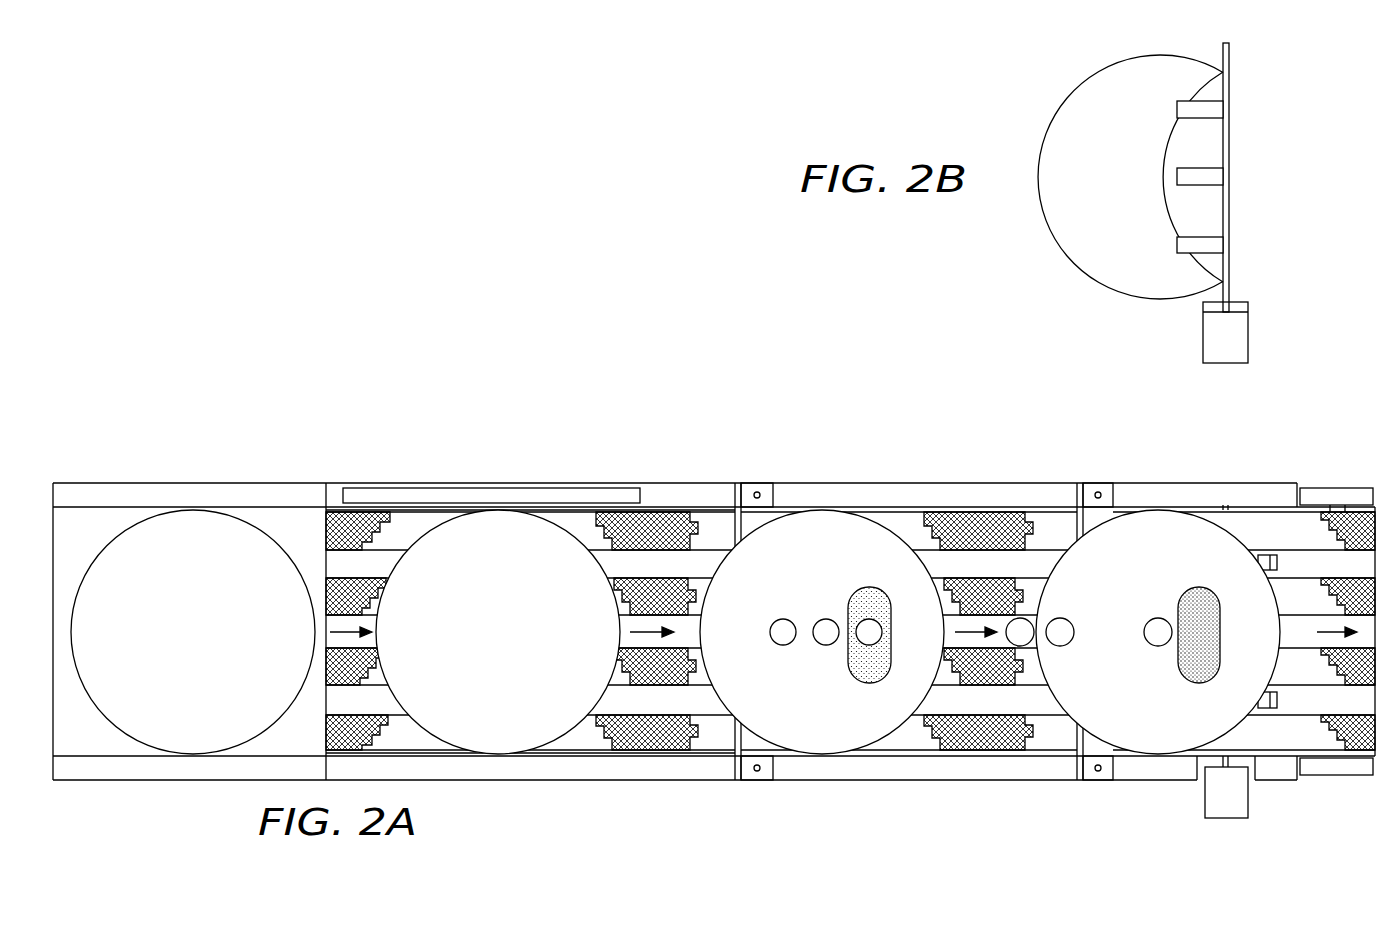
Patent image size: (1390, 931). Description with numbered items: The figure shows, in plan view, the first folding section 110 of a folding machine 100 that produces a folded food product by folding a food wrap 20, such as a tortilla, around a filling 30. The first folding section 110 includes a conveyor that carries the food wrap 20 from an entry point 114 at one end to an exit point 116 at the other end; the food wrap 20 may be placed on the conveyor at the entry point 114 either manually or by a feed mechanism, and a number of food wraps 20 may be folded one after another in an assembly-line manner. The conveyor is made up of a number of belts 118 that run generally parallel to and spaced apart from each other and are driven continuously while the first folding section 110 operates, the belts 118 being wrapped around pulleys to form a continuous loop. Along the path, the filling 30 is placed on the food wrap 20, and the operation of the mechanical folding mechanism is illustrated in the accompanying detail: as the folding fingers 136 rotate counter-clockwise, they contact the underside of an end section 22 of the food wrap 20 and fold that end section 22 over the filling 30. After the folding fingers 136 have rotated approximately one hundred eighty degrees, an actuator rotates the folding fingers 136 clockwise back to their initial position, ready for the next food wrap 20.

In FIG. 2A, the food wrap 20 is at (206, 647).
In FIG. 2B, the food wrap 20 is at (1125, 191).
In FIG. 2B, the end section 22 is at (1210, 148).
In FIG. 2A, the filling 30 is at (849, 668).
In FIG. 2A, the folding machine 100 is at (882, 860).
In FIG. 2A, the first folding section 110 is at (178, 406).
In FIG. 2A, the entry point 114 is at (327, 460).
In FIG. 2A, the exit point 116 is at (1346, 458).
In FIG. 2A, the belts 118 is at (667, 520).
In FIG. 2B, the folding fingers 136 is at (1212, 243).